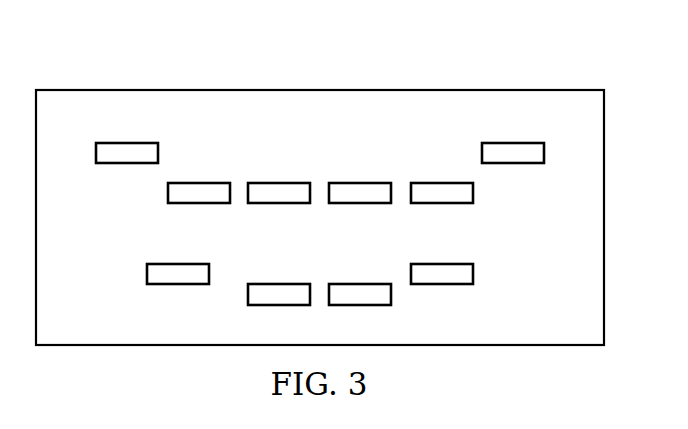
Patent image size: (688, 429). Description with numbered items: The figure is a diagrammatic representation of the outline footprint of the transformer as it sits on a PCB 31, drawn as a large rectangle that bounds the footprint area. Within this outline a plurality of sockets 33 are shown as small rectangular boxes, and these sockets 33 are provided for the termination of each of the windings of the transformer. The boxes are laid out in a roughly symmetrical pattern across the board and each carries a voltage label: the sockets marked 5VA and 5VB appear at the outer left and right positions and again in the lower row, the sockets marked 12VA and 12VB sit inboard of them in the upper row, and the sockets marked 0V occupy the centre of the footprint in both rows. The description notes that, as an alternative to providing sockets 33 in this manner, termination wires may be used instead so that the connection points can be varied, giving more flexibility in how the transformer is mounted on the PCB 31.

The PCB 31 is at (322, 98).
The sockets 33 is at (319, 226).
The 5 V rail A connector 5VA is at (152, 202).
The 5 V rail B connector 5VB is at (477, 202).
The 12 V rail A connector 12VA is at (199, 182).
The 12 V rail B connector 12VB is at (442, 182).
The 0 V (ground) connector 0V is at (319, 257).